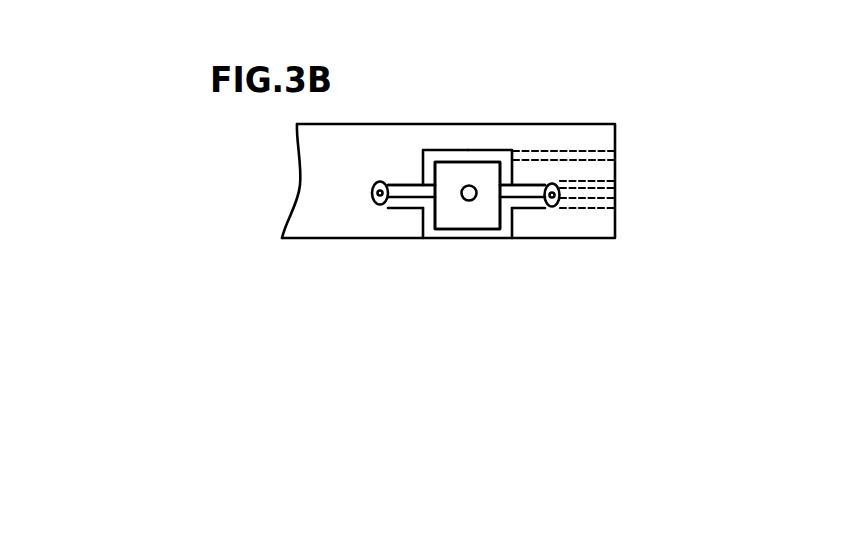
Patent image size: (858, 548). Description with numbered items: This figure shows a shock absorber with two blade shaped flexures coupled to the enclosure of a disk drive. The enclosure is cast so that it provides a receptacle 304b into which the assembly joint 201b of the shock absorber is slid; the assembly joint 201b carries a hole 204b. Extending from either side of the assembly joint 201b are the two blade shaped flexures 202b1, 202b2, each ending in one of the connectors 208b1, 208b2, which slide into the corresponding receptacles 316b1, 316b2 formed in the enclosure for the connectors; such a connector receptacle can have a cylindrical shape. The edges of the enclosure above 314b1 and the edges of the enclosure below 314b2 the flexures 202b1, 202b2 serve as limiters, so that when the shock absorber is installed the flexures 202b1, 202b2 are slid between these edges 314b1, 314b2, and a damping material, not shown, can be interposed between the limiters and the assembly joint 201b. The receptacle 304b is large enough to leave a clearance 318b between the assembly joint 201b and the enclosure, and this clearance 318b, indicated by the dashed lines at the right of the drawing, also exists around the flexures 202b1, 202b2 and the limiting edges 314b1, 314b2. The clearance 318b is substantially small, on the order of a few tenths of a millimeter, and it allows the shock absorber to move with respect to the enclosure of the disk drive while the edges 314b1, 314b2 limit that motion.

The connector 208b1 is at (378, 183).
The connector 208b2 is at (558, 184).
The edges of the enclosure above the flexures 314b1 is at (538, 185).
The receptacle 304b is at (470, 162).
The receptacle for connector 316b1 is at (388, 206).
The receptacle for connector 316b2 is at (542, 208).
The hole 204b is at (469, 200).
The assembly joint 201b is at (453, 208).
The blade shaped flexure 202b1 is at (445, 271).
The blade shaped flexure 202b2 is at (547, 256).
The edges of the enclosure below the flexures 314b2 is at (474, 292).
The clearance 318b is at (612, 200).